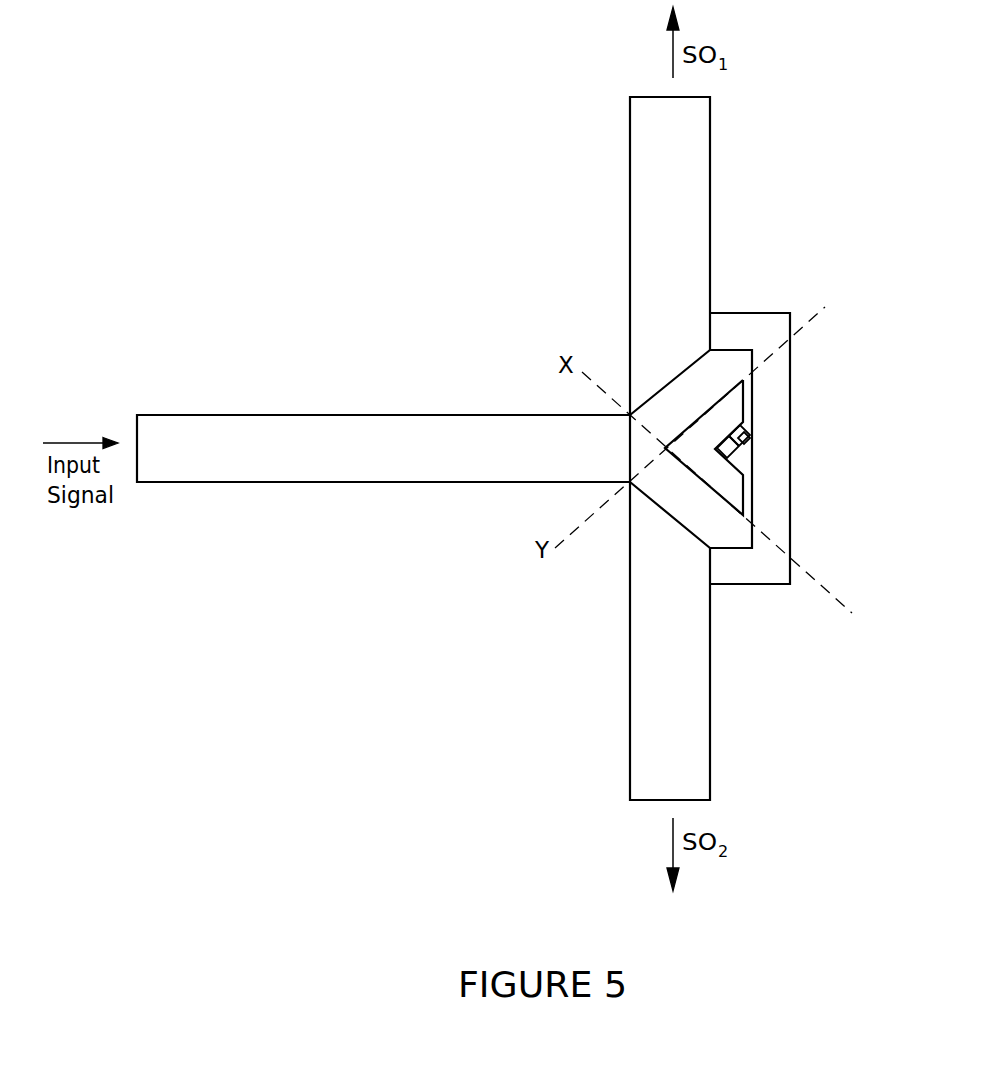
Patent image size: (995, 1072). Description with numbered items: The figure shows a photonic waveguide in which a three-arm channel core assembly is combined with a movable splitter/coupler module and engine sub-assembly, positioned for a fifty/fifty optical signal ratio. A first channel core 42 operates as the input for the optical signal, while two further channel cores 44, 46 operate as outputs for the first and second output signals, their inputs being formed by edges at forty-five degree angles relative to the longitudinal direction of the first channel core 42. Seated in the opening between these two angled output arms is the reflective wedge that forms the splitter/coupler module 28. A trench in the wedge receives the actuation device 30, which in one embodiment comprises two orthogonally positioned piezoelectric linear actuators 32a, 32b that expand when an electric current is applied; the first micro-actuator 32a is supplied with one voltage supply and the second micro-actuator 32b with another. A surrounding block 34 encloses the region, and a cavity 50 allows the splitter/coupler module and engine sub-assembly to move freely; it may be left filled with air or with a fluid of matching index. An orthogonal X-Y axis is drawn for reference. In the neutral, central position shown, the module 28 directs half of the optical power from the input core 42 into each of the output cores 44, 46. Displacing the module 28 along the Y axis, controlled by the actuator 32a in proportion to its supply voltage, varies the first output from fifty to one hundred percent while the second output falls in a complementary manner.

The splitter/coupler module 28 is at (703, 462).
The actuation device 30 is at (750, 452).
The linear actuator 32a is at (748, 432).
The linear actuator 32b is at (748, 464).
The reflector housing block 34 is at (741, 313).
The first channel core 42 is at (270, 415).
The channel core 44 is at (630, 198).
The channel core 46 is at (630, 650).
The cavity 50 is at (713, 532).